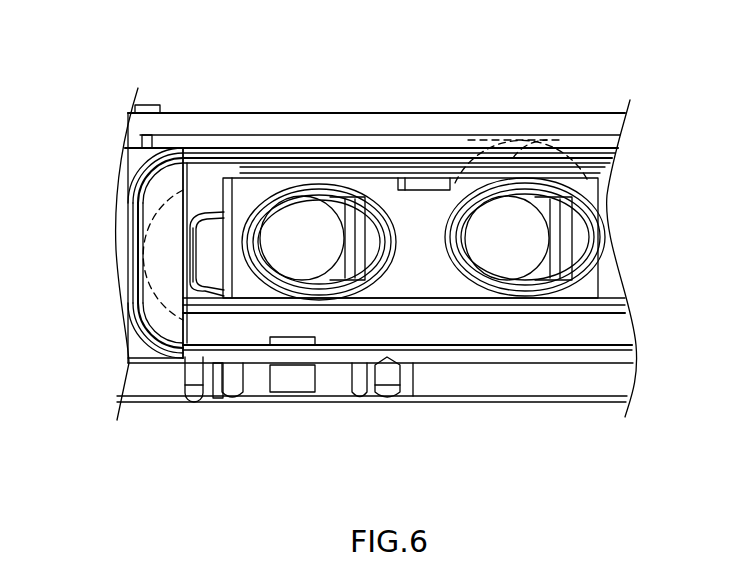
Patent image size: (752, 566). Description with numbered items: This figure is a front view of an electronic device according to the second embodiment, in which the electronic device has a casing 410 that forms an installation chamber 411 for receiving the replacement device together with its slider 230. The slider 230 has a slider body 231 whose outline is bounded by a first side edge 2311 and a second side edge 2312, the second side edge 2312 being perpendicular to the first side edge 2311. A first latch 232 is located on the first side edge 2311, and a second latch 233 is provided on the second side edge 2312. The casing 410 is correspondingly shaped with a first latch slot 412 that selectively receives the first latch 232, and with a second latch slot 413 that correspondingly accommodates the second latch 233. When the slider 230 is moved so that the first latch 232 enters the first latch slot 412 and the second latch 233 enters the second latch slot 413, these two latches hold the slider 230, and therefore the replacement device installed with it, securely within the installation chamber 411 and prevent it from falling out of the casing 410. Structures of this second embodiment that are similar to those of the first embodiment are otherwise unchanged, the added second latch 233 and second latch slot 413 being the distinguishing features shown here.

The casing 410 is at (612, 112).
The installation chamber 411 is at (197, 347).
The first latch slot 412 is at (168, 202).
The second latch slot 413 is at (472, 142).
The slider 230 is at (618, 302).
The slider body 231 is at (437, 257).
The first side edge 2311 is at (233, 283).
The second side edge 2312 is at (600, 196).
The first latch 232 is at (210, 253).
The second latch 233 is at (545, 139).